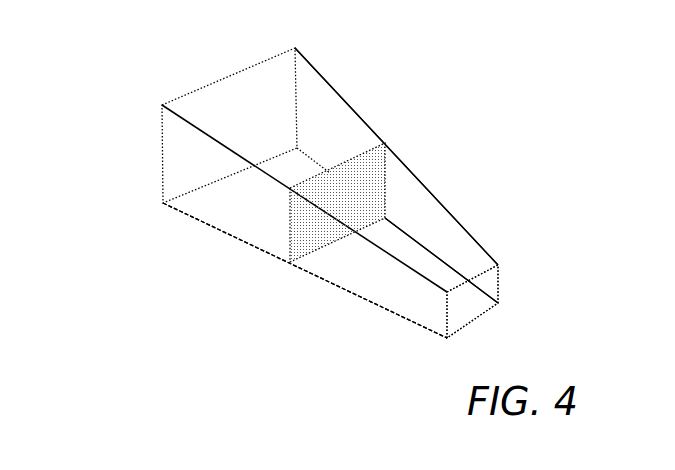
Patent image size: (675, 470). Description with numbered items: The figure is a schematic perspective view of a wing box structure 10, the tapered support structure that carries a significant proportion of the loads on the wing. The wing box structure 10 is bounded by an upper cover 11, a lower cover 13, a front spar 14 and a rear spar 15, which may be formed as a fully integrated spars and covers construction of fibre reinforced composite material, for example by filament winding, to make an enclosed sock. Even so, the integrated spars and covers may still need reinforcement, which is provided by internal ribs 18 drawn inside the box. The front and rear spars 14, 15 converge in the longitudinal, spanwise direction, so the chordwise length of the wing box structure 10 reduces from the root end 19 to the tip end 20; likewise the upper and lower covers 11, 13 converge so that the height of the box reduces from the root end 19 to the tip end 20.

The wing box structure 10 is at (195, 253).
The upper cover 11 is at (316, 100).
The lower cover 13 is at (422, 298).
The front spar 14 is at (430, 223).
The rear spar 15 is at (343, 268).
The internal ribs 18 is at (367, 175).
The root end 19 is at (182, 87).
The tip end 20 is at (468, 306).